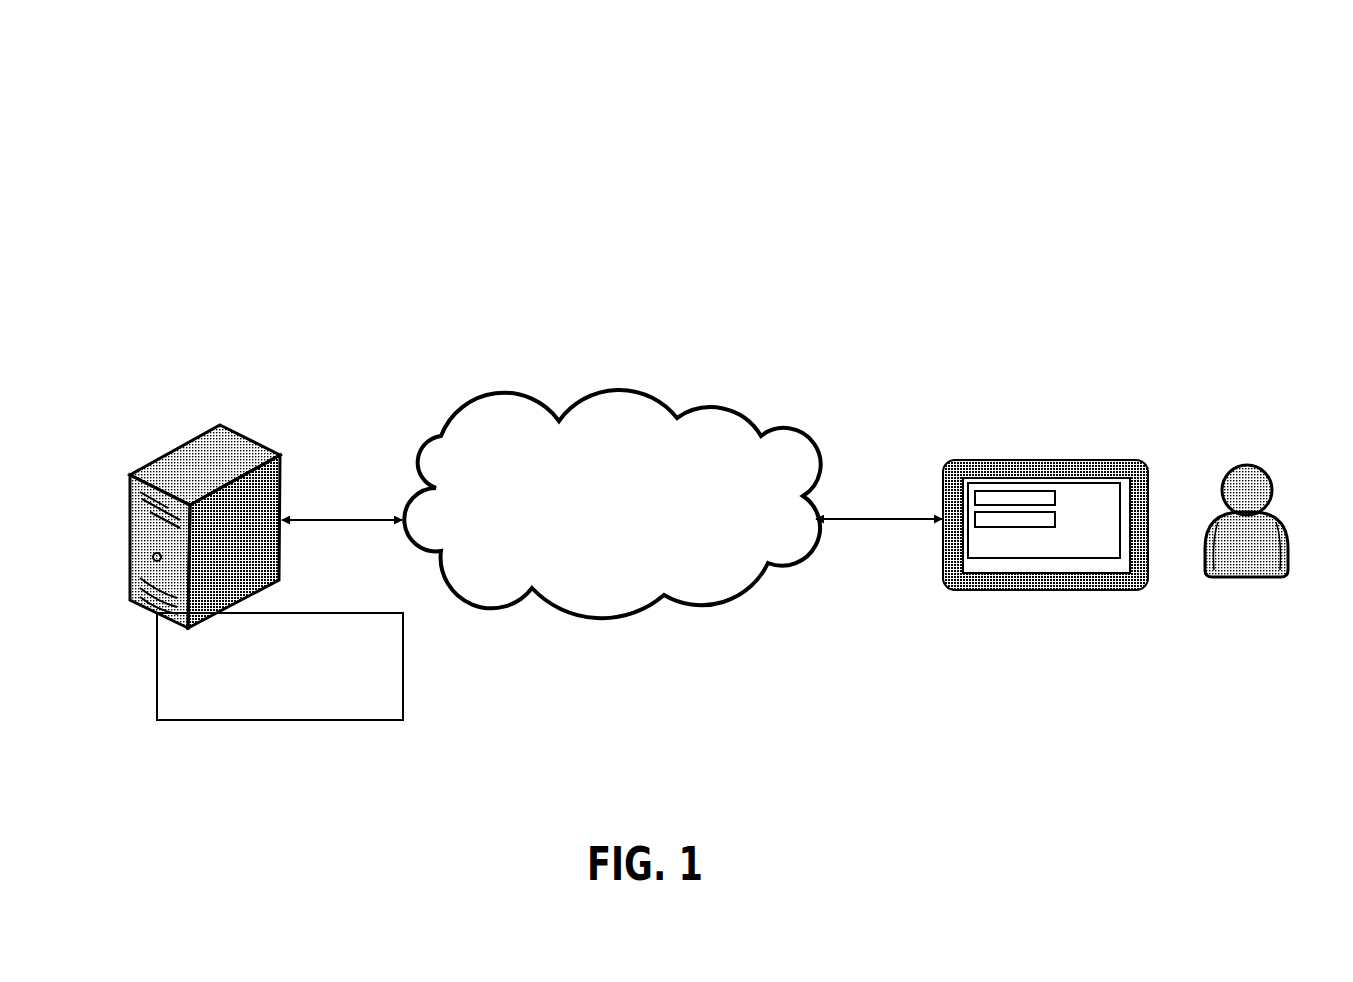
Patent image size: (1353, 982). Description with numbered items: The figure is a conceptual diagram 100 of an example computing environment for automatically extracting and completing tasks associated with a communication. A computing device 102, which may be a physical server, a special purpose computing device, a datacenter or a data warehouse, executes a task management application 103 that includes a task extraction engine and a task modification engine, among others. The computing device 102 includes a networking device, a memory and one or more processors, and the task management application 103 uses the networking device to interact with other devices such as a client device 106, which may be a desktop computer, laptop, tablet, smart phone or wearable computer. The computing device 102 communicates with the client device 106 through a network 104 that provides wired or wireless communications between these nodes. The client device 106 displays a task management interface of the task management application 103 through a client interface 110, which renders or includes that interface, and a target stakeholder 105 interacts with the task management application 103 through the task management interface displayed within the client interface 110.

The diagram 100 is at (1170, 78).
The computing device 102 is at (174, 411).
The task management application 103 is at (275, 718).
The network 104 is at (557, 624).
The target stakeholder 105 is at (1262, 458).
The client device 106 is at (1015, 453).
The client interface 110 is at (1103, 560).